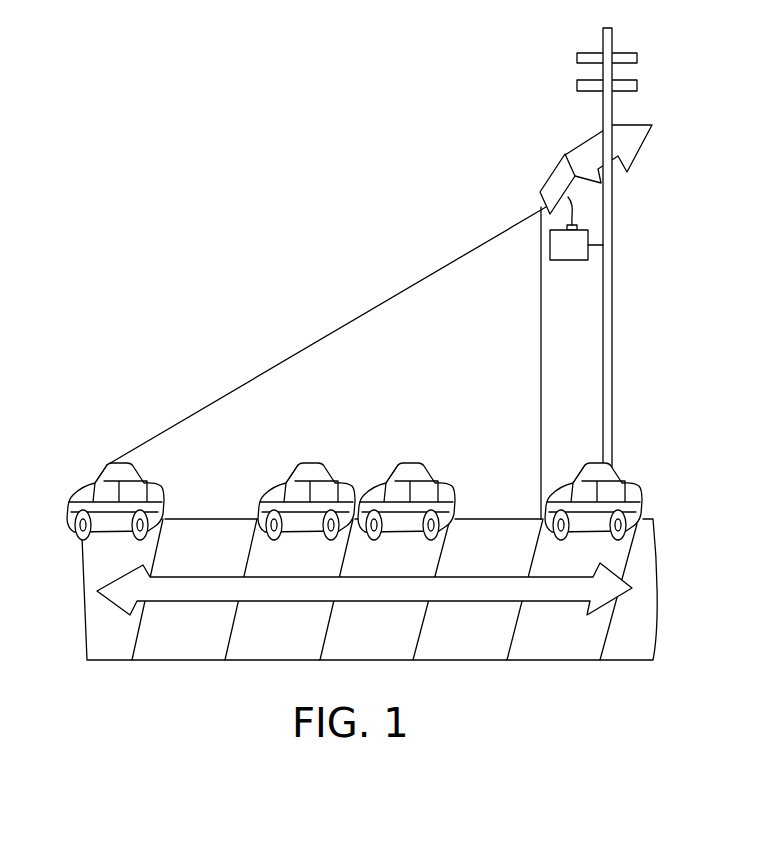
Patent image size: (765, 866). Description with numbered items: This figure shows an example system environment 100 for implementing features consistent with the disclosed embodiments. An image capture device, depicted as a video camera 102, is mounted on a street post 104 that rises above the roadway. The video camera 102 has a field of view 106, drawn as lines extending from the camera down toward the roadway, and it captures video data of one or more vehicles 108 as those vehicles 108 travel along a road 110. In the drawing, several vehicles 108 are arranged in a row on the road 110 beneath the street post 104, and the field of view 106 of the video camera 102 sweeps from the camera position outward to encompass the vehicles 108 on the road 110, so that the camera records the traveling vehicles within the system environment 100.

The system environment 100 is at (131, 146).
The video camera 102 is at (552, 173).
The street post 104 is at (612, 348).
The field of view 106 is at (385, 302).
The vehicles 108 is at (408, 462).
The road 110 is at (93, 612).